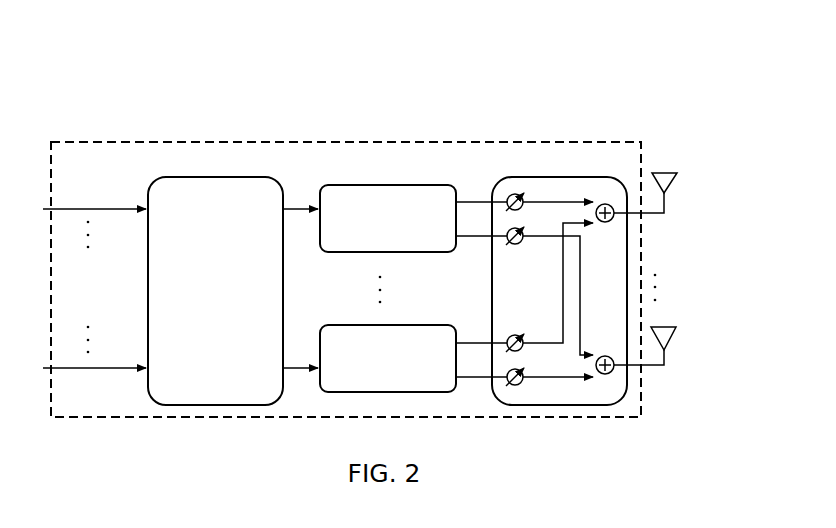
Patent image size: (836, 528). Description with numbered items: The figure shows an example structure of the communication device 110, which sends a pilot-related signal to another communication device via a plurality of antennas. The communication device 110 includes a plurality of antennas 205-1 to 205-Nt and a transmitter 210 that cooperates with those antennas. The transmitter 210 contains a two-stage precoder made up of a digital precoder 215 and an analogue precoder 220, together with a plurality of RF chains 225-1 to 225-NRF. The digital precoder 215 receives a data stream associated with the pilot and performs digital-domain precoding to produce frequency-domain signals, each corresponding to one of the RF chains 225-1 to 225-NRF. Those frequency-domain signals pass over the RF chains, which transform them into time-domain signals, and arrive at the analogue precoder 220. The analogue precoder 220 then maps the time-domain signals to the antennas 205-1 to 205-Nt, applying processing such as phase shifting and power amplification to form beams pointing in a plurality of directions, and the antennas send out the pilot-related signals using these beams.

The communication device 110 is at (224, 111).
The transmitter 210 is at (585, 141).
The digital precoder 215 is at (231, 176).
The analogue precoder 220 is at (566, 176).
The RF chain 225-1 is at (400, 184).
The RF chain 225-NRF is at (400, 324).
The antenna 205-1 is at (664, 172).
The antenna 205-Nt is at (664, 326).